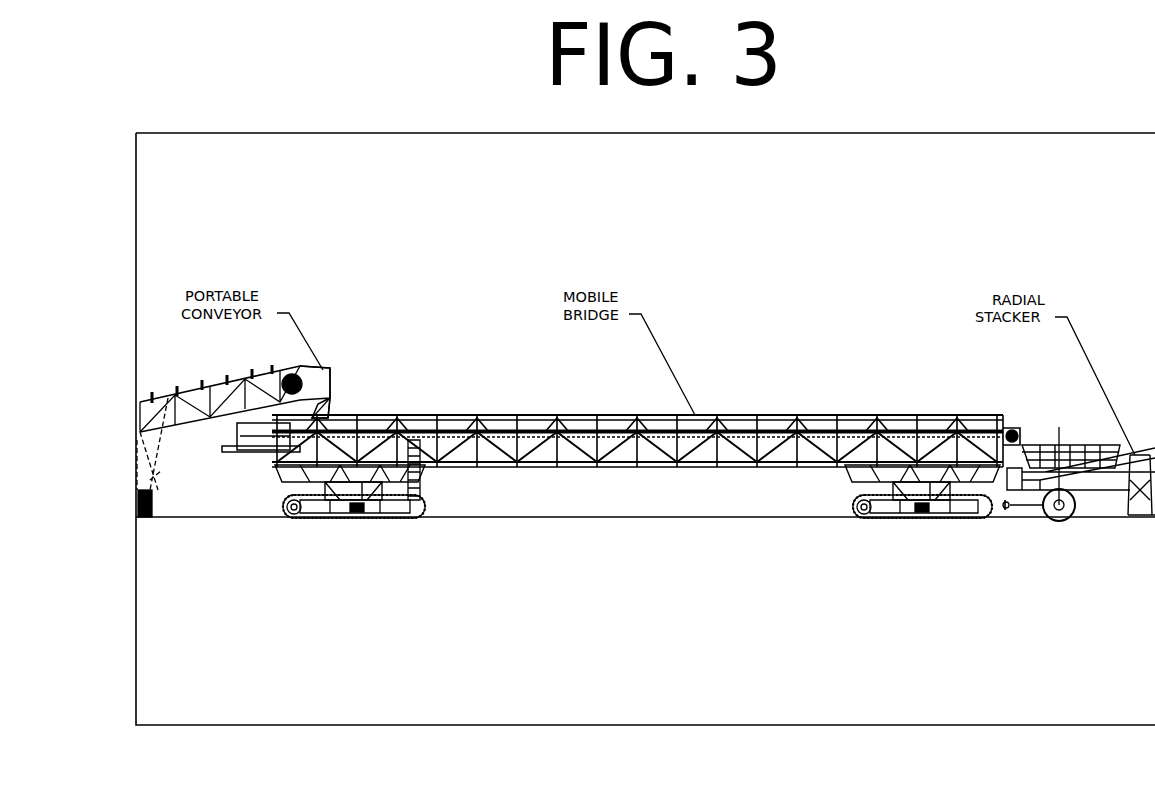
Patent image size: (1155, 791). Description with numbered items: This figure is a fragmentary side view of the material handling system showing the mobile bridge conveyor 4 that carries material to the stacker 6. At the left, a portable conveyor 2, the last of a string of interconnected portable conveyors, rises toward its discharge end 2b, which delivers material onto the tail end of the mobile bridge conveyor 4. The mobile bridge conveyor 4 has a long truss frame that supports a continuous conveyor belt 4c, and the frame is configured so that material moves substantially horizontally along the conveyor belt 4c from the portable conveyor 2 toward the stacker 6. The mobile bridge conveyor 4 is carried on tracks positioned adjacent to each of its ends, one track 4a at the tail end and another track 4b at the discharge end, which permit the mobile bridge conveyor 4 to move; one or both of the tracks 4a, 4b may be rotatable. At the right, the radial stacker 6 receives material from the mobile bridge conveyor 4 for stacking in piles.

The portable conveyor 2 is at (168, 395).
The discharge end 2b is at (326, 378).
The mobile bridge conveyor 4 is at (520, 468).
The track 4a is at (345, 512).
The second crawler track of mobile bridge 4b is at (890, 520).
The conveyor belt 4c is at (785, 415).
The stacker 6 is at (1154, 410).